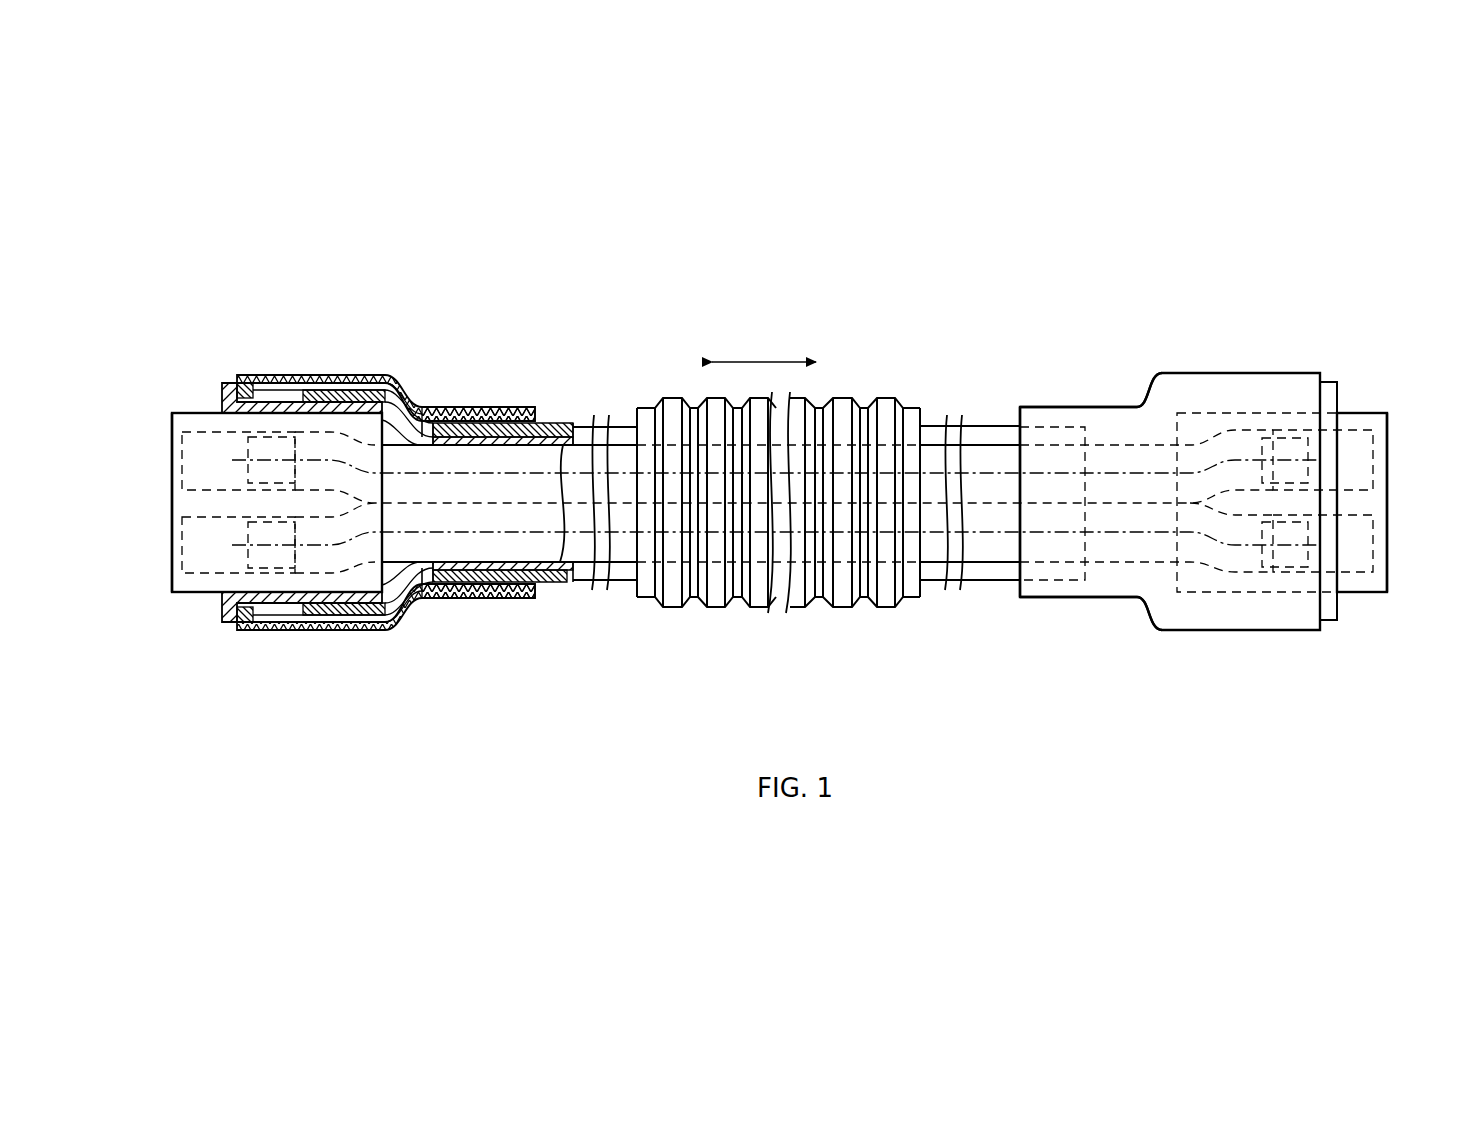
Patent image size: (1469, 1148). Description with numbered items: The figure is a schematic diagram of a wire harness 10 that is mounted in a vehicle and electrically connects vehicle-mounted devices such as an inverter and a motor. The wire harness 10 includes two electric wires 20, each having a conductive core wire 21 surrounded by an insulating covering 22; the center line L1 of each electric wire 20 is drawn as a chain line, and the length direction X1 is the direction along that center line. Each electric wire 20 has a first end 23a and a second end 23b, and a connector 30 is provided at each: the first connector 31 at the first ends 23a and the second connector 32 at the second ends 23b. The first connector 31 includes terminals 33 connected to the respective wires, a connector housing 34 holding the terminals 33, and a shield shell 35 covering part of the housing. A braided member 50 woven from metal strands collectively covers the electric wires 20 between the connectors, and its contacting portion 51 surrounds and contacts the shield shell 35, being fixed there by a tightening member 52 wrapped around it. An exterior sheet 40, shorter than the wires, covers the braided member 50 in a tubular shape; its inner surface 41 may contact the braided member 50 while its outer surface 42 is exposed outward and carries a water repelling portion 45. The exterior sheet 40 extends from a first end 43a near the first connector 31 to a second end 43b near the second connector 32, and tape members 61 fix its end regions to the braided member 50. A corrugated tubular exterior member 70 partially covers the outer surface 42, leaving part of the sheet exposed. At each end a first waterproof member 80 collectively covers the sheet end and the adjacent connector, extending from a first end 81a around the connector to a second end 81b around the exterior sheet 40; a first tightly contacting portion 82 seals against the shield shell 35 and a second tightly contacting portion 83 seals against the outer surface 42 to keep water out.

The wire harness 10 is at (1134, 263).
The electric wire 20 is at (1133, 440).
The core wire 21 is at (246, 540).
The insulating covering 22 is at (405, 388).
The first end 23a is at (247, 448).
The second end 23b is at (1342, 470).
The connector 30 is at (805, 437).
The first connector 31 is at (277, 502).
The second connector 32 is at (1362, 502).
The terminal 33 is at (1387, 540).
The connector housing 34 is at (1385, 498).
The shield shell 35 is at (256, 396).
The exterior sheet 40 is at (985, 423).
The inner surface 41 is at (542, 553).
The outer surface 42 is at (566, 586).
The first end 43a is at (448, 575).
The second end 43b is at (1086, 483).
The water repelling portion 45 is at (616, 422).
The braided member 50 is at (412, 412).
The contacting portion 51 is at (320, 392).
The tightening member 52 is at (350, 388).
The tape member 61 is at (452, 590).
The exterior member 70 is at (712, 608).
The first waterproof member 80 is at (764, 513).
The first end 81a is at (316, 631).
The second end 81b is at (536, 600).
The first tightly contacting portion 82 is at (252, 384).
The second tightly contacting portion 83 is at (540, 428).
The center line L1 is at (425, 512).
The length direction X1 is at (773, 360).